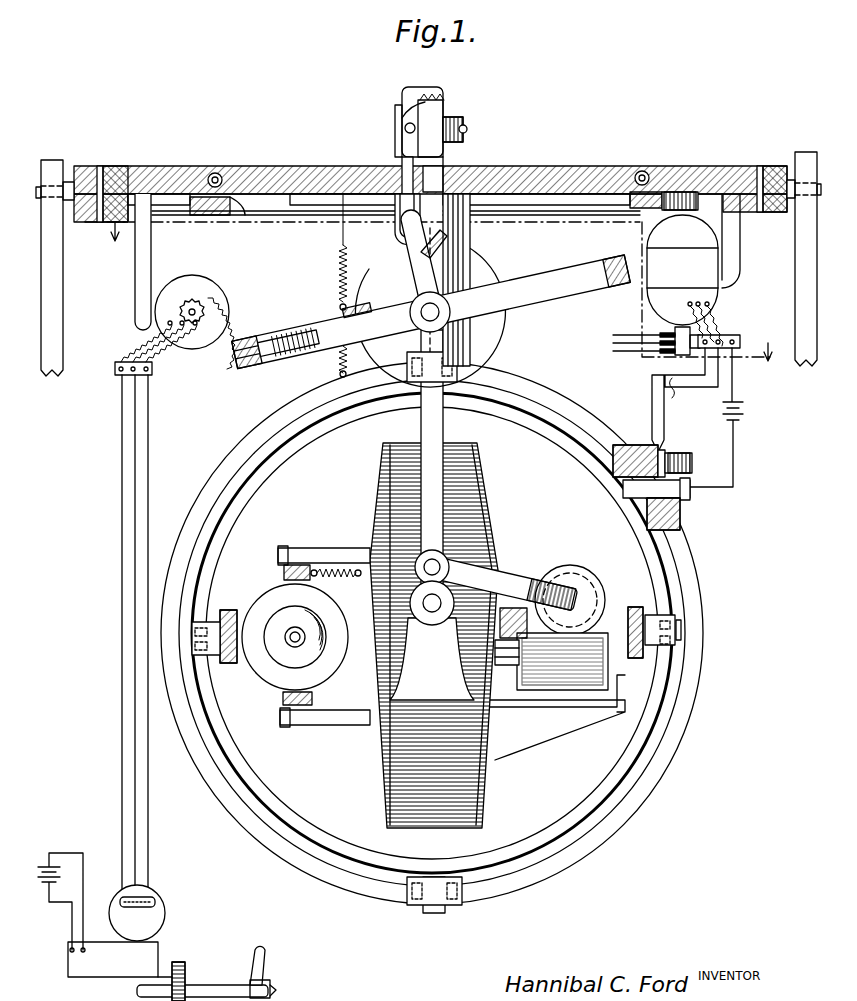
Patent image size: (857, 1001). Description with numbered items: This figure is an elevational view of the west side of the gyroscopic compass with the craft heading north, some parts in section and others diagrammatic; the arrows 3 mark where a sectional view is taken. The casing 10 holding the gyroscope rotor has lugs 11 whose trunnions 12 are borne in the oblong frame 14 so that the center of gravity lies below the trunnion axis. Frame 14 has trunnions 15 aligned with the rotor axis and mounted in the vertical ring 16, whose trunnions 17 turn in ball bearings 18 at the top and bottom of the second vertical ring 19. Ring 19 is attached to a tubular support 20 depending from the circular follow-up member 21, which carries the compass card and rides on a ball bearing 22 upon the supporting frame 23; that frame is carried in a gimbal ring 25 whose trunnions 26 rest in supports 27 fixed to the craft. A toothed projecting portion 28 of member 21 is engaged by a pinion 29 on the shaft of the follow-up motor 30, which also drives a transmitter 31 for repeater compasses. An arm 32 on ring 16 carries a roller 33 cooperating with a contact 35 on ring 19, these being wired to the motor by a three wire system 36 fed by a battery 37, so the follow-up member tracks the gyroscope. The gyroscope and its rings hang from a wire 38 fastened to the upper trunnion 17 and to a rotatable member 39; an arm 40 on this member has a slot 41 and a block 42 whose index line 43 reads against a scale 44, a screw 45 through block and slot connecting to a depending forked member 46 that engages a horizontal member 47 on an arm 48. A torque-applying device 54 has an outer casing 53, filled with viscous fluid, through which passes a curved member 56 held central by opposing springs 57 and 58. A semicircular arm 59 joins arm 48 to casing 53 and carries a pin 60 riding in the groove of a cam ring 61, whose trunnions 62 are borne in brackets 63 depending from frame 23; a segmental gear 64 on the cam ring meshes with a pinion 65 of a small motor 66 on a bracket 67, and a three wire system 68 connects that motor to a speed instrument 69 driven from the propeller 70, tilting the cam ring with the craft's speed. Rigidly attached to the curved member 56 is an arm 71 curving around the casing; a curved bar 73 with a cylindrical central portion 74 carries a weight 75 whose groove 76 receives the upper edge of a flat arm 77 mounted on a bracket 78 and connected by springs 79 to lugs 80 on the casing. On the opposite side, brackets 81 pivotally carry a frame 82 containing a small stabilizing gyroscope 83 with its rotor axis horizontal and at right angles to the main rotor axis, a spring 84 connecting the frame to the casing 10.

The section line 3 is at (435, 291).
The casing 10 is at (405, 776).
The lugs 11 is at (432, 650).
The trunnion 12 is at (425, 605).
The oblong frame 14 is at (230, 665).
The trunnions 15 is at (190, 652).
The vertical ring 16 is at (275, 806).
The trunnions 17 is at (445, 345).
The ball bearings 18 is at (462, 368).
The second vertical ring 19 is at (590, 840).
The tubular support 20 is at (470, 233).
The circular follow-up member 21 is at (556, 168).
The ball bearing 22 is at (215, 172).
The supporting frame 23 is at (186, 167).
The gimbal ring 25 is at (100, 160).
The trunnions 26 is at (69, 182).
The supports 27 is at (52, 160).
The projecting portion 28 is at (665, 192).
The pinion 29 is at (680, 192).
The follow-up motor 30 is at (696, 274).
The transmitter 31 is at (665, 358).
The arm 32 is at (678, 496).
The roller 33 is at (692, 465).
The contact 35 is at (666, 452).
The three wire system 36 is at (735, 388).
The battery 37 is at (745, 410).
The wire 38 is at (460, 202).
The member 39 is at (443, 178).
The arm 40 is at (447, 92).
The slot 41 is at (405, 128).
The block 42 is at (418, 140).
The index line 43 is at (400, 112).
The scale 44 is at (432, 103).
The screw 45 is at (456, 120).
The forked member 46 is at (404, 162).
The horizontal member 47 is at (400, 226).
The arm 48 is at (423, 252).
The outer casing 53 is at (500, 270).
The torque-applying device 54 is at (505, 250).
The curved member 56 is at (362, 305).
The spring 57 is at (340, 280).
The spring 58 is at (336, 360).
The semicircular arm 59 is at (305, 330).
The pin 60 is at (255, 343).
The cam ring 61 is at (243, 372).
The trunnions 62 is at (440, 312).
The brackets 63 is at (440, 276).
The segmental gear 64 is at (212, 362).
The pinion 65 is at (196, 298).
The small motor 66 is at (186, 280).
The bracket 67 is at (152, 245).
The three wire system 68 is at (122, 540).
The instrument 69 is at (165, 911).
The propeller 70 is at (262, 958).
The arm 71 is at (443, 505).
The curved bar 73 is at (500, 588).
The cylindrical central portion 74 is at (585, 598).
The weight 75 is at (557, 565).
The groove 76 is at (585, 573).
The flat arm 77 is at (562, 661).
The bracket 78 is at (568, 707).
The springs 79 is at (527, 655).
The lugs 80 is at (502, 640).
The brackets 81 is at (323, 548).
The frame 82 is at (282, 573).
The stabilizing gyroscope 83 is at (275, 600).
The spring 84 is at (338, 576).